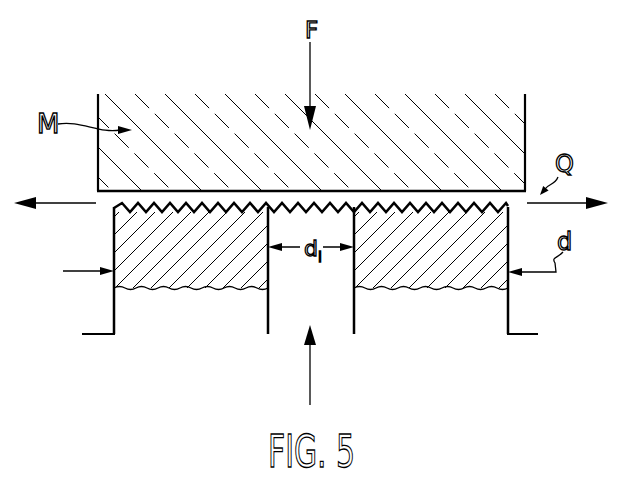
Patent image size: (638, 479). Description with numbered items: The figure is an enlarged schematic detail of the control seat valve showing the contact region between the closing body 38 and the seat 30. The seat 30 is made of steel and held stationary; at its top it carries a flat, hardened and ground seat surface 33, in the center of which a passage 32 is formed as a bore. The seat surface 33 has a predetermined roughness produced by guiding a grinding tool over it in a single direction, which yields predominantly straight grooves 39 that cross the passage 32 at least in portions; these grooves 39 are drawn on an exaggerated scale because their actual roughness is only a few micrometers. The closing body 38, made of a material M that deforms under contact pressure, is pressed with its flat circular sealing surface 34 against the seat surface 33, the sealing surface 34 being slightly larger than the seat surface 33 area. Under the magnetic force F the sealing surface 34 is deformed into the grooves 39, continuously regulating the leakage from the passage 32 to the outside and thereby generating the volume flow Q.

The seat 30 is at (309, 304).
The passage 32 is at (333, 268).
The seat surface 33 is at (202, 222).
The sealing surface 34 is at (448, 190).
The closing body 38 is at (483, 97).
The grooves 39 is at (464, 211).